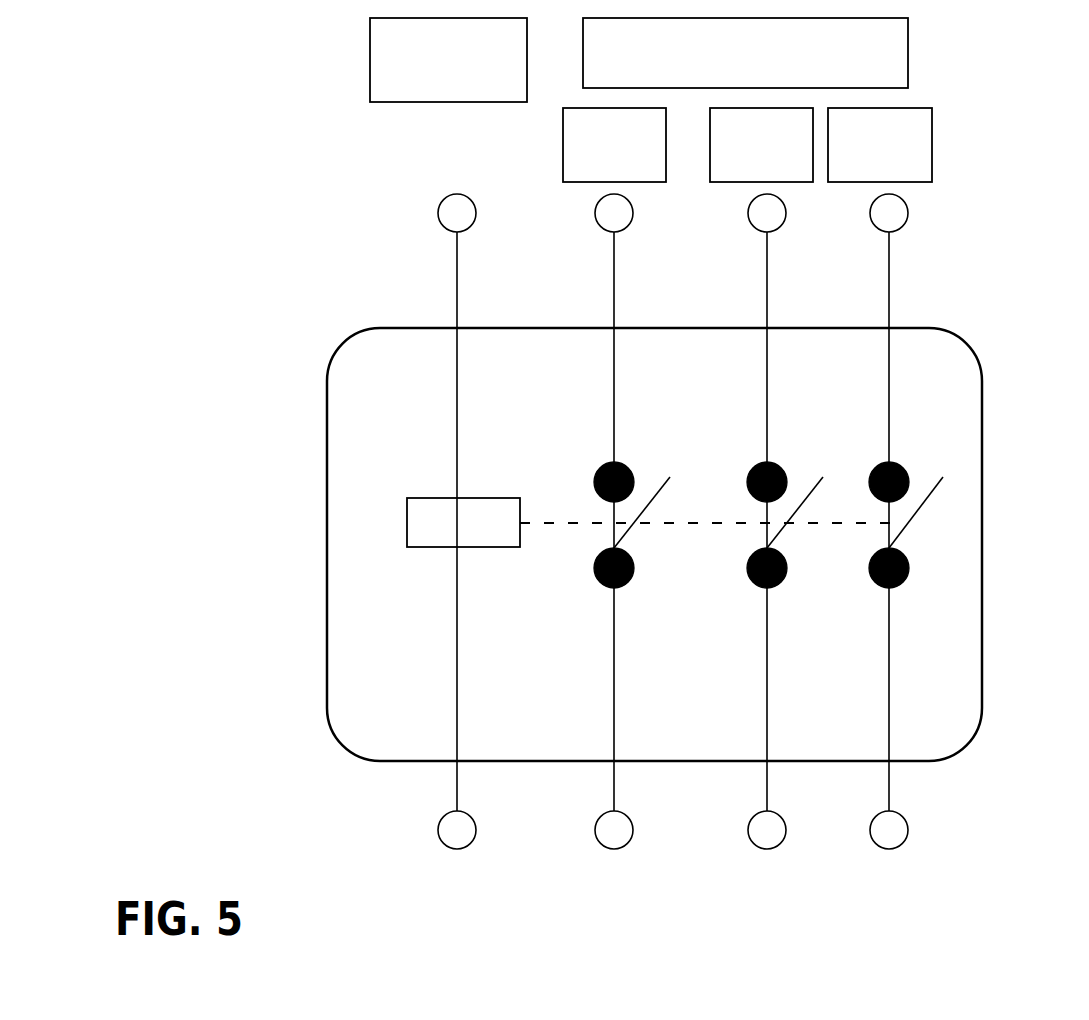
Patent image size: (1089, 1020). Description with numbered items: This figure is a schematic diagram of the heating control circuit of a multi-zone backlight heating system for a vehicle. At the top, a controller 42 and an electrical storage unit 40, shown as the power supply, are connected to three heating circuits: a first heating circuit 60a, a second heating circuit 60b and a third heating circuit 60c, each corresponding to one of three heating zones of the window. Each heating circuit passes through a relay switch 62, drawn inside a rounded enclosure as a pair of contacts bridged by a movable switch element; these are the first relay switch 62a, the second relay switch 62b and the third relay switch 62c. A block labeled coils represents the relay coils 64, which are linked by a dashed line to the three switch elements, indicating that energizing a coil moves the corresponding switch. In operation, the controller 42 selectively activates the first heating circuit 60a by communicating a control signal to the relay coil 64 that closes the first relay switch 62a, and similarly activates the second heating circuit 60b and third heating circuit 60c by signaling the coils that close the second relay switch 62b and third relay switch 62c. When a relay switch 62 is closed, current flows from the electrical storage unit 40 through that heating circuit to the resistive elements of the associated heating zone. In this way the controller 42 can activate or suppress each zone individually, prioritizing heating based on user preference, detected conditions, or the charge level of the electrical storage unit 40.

The electrical storage unit 40 is at (908, 60).
The controller 42 is at (370, 68).
The first heating circuit 60a is at (563, 162).
The second heating circuit 60b is at (710, 162).
The third heating circuit 60c is at (932, 162).
The relay switch 62 is at (930, 458).
The first relay switch 62a is at (597, 478).
The second relay switch 62b is at (750, 478).
The third relay switch 62c is at (870, 478).
The relay coil 64 is at (398, 515).